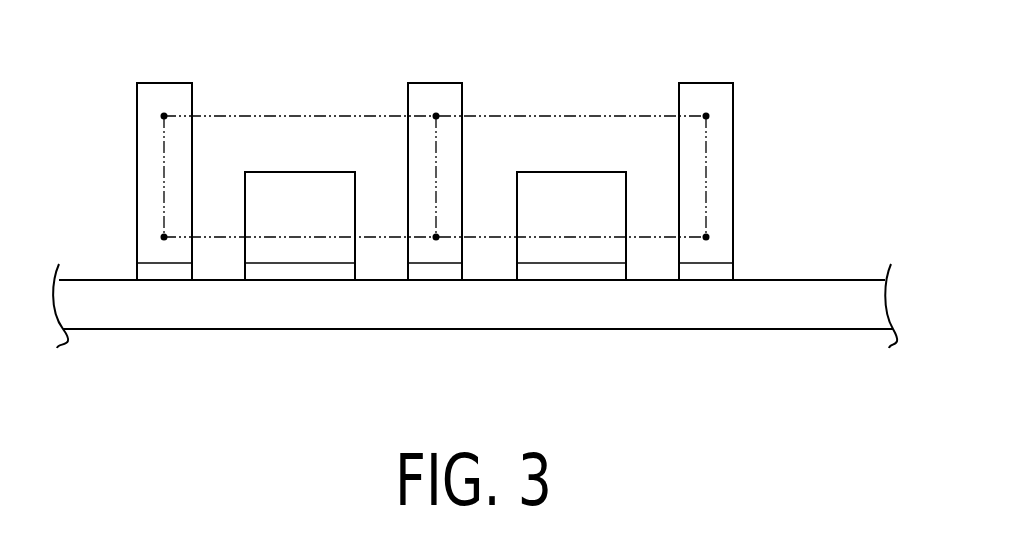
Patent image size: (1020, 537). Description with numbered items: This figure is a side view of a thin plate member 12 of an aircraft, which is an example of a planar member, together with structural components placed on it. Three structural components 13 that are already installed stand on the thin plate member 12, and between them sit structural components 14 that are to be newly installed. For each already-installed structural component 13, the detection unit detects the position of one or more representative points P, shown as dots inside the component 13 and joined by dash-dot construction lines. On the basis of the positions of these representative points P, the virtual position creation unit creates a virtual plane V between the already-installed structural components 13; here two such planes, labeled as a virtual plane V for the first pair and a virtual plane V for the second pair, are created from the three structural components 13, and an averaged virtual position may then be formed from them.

The thin plate member 12 is at (808, 313).
The structural component 13 is at (163, 82).
The structural component 14 is at (322, 171).
The representative point P is at (164, 116).
The virtual plane V is at (288, 128).